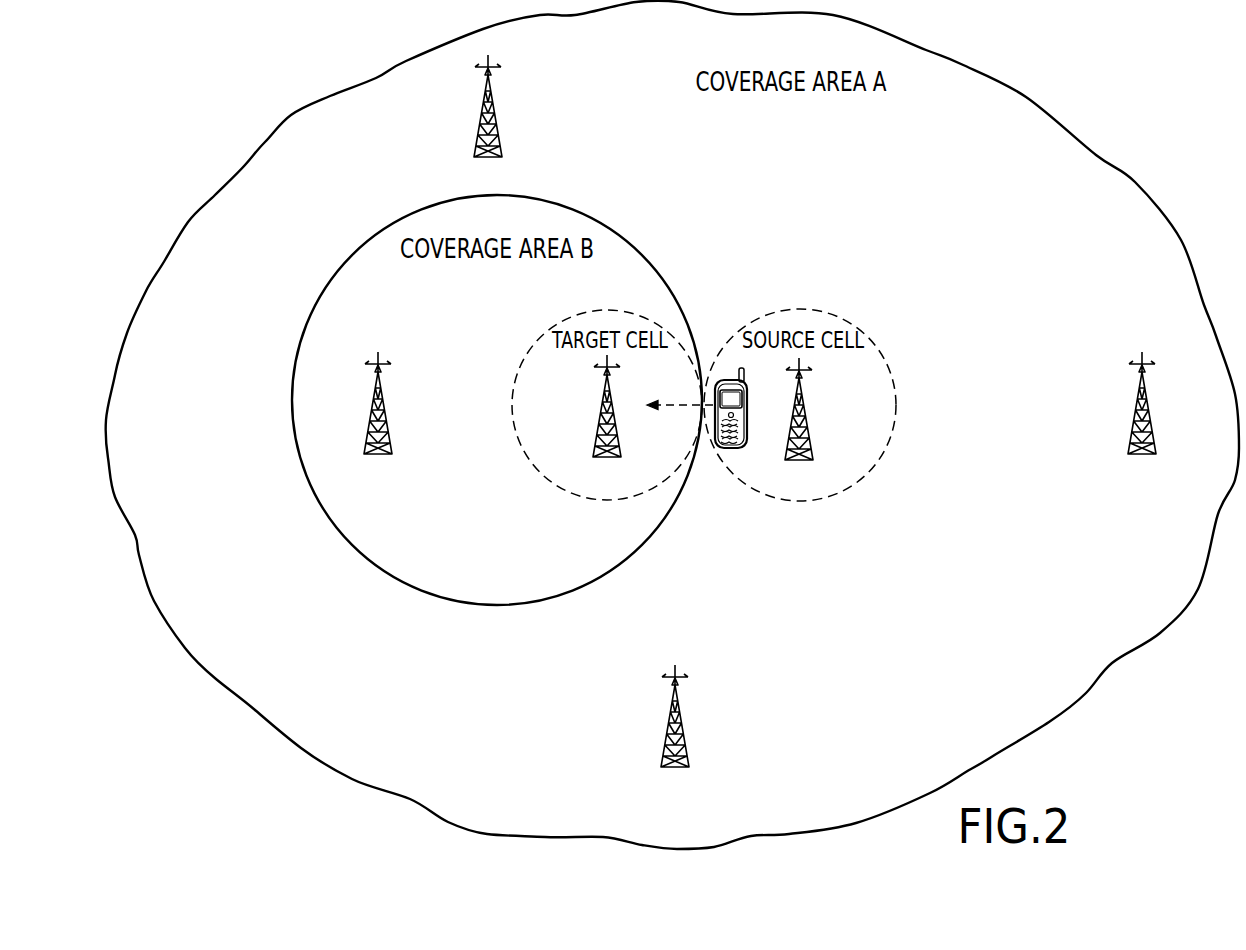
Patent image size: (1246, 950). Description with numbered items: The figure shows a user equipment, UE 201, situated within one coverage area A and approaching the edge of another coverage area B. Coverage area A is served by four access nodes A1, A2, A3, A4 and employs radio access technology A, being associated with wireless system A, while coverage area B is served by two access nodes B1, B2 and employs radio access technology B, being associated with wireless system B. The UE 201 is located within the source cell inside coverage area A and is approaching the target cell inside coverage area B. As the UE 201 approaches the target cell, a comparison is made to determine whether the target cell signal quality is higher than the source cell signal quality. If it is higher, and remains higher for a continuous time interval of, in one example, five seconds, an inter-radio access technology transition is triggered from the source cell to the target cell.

The user equipment 201 is at (727, 448).
The access node A1 is at (799, 424).
The access node A2 is at (1141, 420).
The access node A3 is at (488, 122).
The access node A4 is at (675, 734).
The access node B1 is at (607, 423).
The access node B2 is at (378, 419).